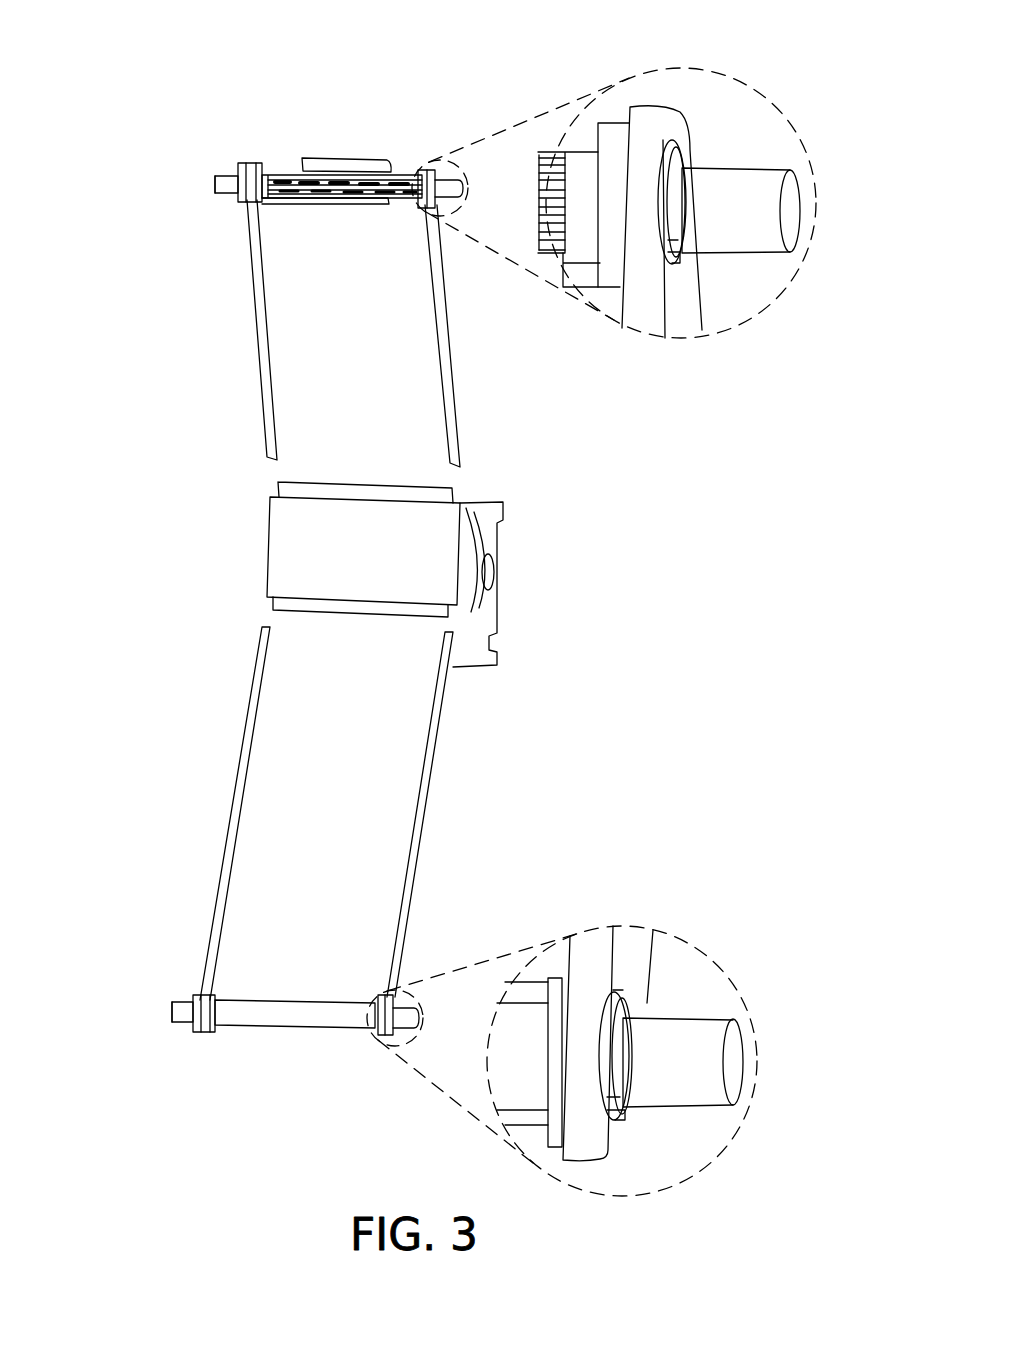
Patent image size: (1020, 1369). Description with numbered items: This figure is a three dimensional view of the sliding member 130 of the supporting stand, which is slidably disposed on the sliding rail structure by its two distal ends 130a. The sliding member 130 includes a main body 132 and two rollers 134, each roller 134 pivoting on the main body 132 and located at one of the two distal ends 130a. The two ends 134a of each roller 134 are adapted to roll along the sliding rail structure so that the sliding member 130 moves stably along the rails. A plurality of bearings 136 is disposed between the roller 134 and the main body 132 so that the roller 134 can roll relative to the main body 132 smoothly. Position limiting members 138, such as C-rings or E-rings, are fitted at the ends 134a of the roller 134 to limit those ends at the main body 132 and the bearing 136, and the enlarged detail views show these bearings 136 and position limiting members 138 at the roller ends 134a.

The sliding member 130 is at (115, 390).
The distal ends 130a is at (193, 187).
The main body 132 is at (293, 530).
The roller 134 is at (313, 190).
The ends of the roller 134a is at (227, 180).
The bearing 136 is at (673, 247).
The position limiting member 138 is at (687, 158).